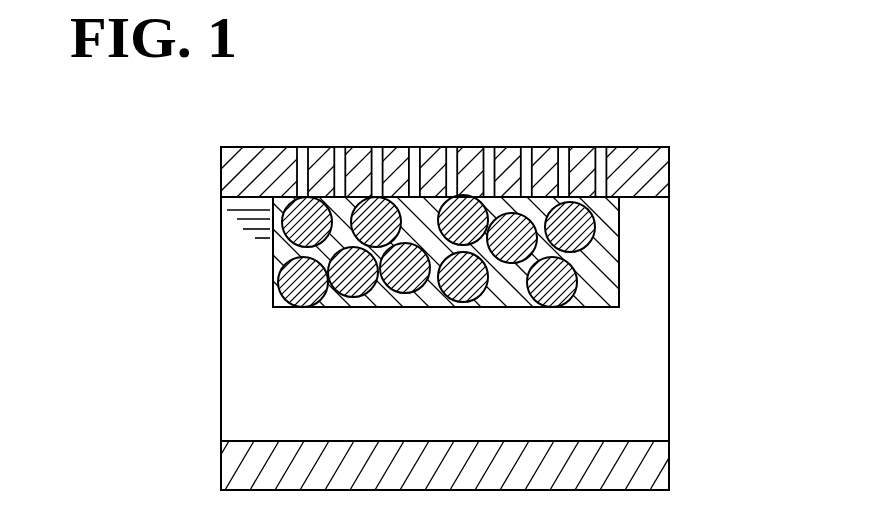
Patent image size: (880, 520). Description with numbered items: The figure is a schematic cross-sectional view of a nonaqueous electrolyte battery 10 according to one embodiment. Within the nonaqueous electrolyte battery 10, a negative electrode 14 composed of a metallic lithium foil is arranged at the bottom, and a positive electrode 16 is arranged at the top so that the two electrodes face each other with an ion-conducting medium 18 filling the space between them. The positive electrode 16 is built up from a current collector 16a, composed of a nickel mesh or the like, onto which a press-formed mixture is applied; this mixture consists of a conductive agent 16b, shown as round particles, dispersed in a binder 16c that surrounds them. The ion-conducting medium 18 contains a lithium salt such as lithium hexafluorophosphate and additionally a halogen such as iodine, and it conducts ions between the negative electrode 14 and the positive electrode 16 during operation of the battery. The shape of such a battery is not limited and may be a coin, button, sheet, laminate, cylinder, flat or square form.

The nonaqueous electrolyte battery 10 is at (643, 130).
The negative electrode 14 is at (628, 470).
The positive electrode 16 is at (742, 148).
The current collector 16a is at (630, 177).
The conductive agent 16b is at (577, 218).
The binder 16c is at (612, 236).
The ion-conducting medium 18 is at (628, 370).